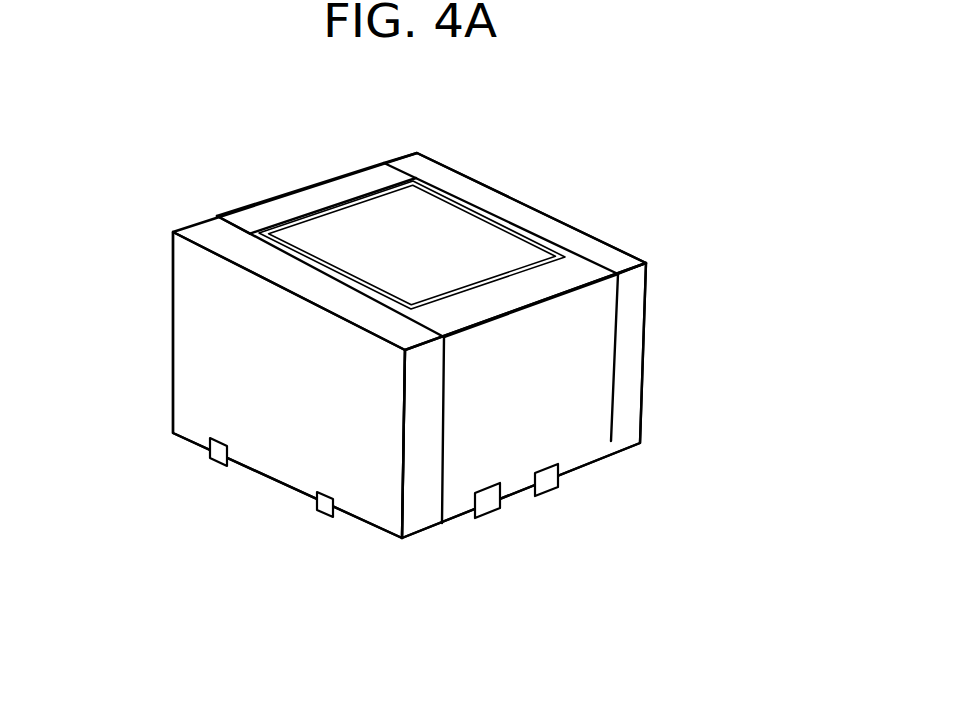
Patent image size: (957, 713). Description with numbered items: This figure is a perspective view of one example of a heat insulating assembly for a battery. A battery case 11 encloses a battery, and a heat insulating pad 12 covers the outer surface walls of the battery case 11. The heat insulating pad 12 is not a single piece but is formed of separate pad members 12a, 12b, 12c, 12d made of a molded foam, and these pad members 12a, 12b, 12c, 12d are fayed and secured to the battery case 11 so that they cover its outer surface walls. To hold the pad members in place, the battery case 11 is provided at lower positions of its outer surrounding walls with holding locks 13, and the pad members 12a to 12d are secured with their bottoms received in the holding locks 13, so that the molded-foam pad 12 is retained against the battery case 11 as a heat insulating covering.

The battery case 11 is at (452, 227).
The heat insulating pad 12 is at (655, 257).
The pad member 12a is at (197, 343).
The pad member 12b is at (293, 193).
The pad member 12c is at (560, 233).
The pad member 12d is at (590, 382).
The holding lock 13 is at (323, 508).